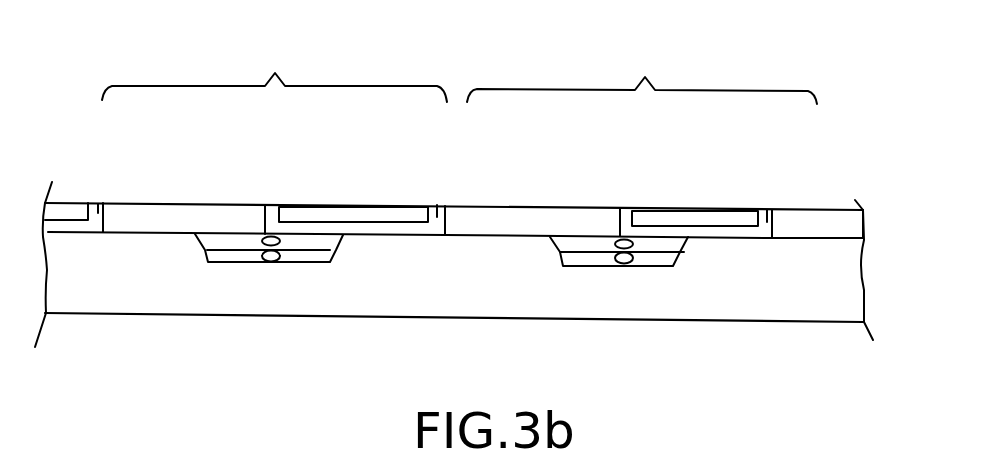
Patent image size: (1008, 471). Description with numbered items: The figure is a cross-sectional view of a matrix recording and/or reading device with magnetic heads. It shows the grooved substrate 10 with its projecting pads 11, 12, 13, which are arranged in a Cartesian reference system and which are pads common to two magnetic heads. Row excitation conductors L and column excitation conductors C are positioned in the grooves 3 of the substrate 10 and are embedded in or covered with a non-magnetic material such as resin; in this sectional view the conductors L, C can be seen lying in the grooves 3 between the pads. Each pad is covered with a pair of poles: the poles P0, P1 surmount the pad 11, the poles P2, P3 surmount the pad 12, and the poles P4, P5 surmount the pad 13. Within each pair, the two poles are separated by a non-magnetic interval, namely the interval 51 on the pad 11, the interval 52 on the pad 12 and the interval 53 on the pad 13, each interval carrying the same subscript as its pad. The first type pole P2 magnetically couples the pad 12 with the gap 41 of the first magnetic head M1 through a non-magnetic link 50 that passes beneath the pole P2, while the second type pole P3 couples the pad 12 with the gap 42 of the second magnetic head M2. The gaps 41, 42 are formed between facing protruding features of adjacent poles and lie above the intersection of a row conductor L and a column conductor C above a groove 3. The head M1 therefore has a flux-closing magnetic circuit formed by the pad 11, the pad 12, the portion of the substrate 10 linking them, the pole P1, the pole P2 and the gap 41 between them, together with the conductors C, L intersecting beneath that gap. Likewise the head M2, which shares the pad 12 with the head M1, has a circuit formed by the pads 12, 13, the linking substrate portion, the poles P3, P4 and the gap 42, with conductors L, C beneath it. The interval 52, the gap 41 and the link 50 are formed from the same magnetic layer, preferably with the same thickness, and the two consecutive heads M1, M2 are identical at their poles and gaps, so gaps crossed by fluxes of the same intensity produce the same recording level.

The grooved substrate 10 is at (860, 280).
The projecting pad 11 is at (130, 255).
The projecting pad 12 is at (497, 268).
The projecting pad 13 is at (788, 263).
The pole P0 is at (66, 203).
The pole P1 is at (190, 203).
The first type pole P2 is at (363, 204).
The second type pole P3 is at (535, 208).
The pole P4 is at (697, 208).
The pole P5 is at (825, 220).
The non-magnetic interval 51 is at (98, 204).
The non-magnetic interval 52 is at (436, 205).
The non-magnetic interval 53 is at (767, 212).
The gap 41 is at (270, 204).
The gap 42 is at (625, 208).
The first magnetic head M1 is at (274, 71).
The second magnetic head M2 is at (642, 74).
The row excitation conductor L is at (225, 257).
The column excitation conductor C is at (315, 240).
The groove 3 is at (272, 262).
The non-magnetic link 50 is at (403, 230).